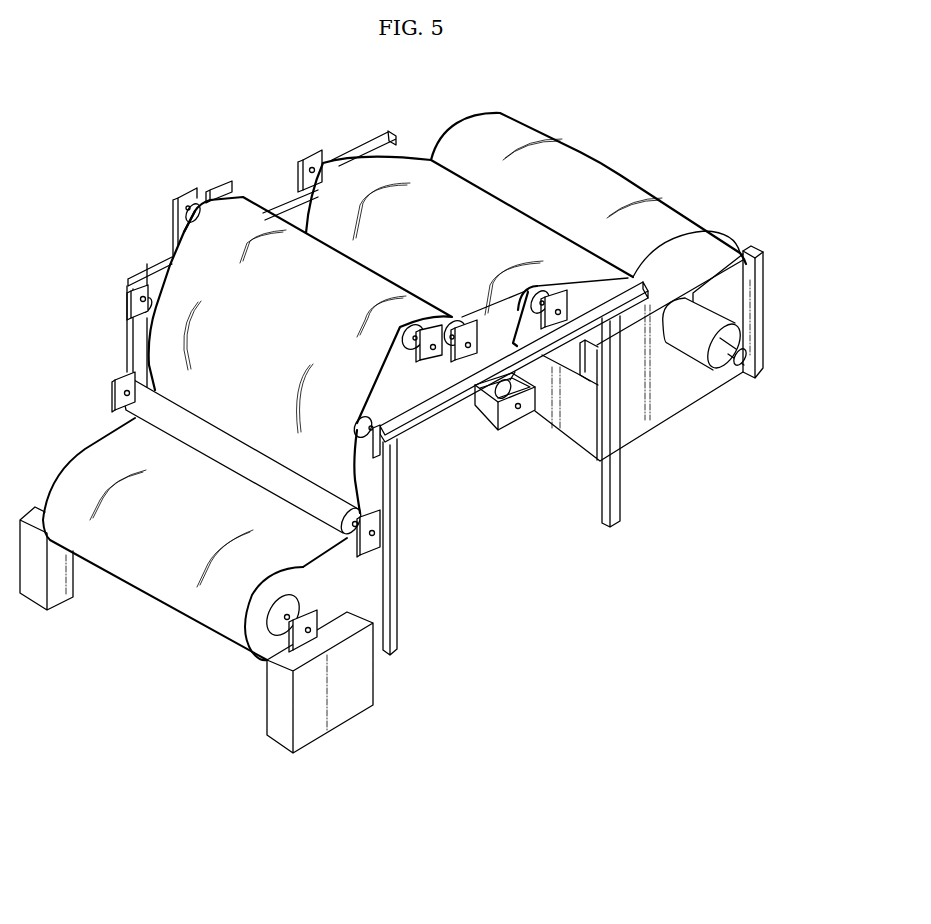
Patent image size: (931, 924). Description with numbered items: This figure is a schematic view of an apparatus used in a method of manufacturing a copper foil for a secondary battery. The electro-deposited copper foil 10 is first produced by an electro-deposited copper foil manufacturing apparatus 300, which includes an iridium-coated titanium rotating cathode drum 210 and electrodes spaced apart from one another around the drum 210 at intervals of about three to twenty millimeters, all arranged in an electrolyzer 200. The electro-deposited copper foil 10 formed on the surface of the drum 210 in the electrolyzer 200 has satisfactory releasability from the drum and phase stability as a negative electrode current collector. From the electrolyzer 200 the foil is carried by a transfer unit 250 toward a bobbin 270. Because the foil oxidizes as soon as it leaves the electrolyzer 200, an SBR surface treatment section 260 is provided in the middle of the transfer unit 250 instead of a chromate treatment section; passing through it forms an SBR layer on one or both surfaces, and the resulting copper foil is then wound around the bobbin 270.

The electro-deposited copper foil 10 is at (447, 205).
The electrolyzer 200 is at (677, 387).
The rotating cathode drum 210 is at (593, 172).
The transfer unit 250 is at (200, 140).
The SBR surface treatment section 260 is at (490, 420).
The bobbin 270 is at (250, 648).
The electro-deposited copper foil manufacturing apparatus 300 is at (760, 239).